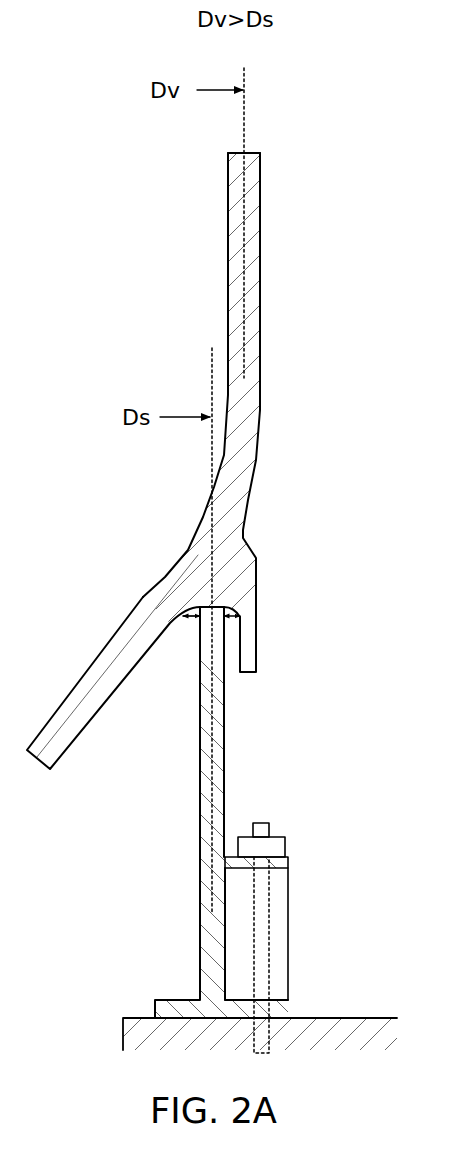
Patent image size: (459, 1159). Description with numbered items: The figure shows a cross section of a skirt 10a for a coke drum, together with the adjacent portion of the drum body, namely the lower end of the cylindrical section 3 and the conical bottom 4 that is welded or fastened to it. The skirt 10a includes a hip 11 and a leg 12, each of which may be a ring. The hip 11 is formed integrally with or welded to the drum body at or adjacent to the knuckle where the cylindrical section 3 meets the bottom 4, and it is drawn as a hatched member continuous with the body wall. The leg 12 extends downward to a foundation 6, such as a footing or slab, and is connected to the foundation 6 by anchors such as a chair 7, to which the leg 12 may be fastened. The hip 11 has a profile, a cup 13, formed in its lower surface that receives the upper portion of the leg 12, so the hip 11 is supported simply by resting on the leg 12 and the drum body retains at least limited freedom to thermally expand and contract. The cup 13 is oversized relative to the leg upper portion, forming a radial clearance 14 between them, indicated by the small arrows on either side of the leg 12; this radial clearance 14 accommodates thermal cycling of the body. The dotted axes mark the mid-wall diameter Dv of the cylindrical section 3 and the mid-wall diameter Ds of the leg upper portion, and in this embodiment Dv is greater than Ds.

The skirt 10a is at (88, 85).
The cylindrical section 3 is at (261, 178).
The bottom 4 is at (40, 733).
The foundation 6 is at (387, 1033).
The chair 7 is at (288, 912).
The hip 11 is at (257, 618).
The leg 12 is at (200, 775).
The cup 13 is at (214, 607).
The radial clearance 14 is at (188, 619).